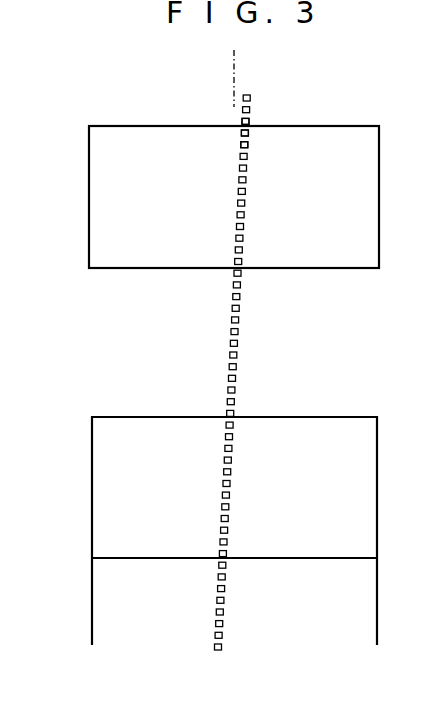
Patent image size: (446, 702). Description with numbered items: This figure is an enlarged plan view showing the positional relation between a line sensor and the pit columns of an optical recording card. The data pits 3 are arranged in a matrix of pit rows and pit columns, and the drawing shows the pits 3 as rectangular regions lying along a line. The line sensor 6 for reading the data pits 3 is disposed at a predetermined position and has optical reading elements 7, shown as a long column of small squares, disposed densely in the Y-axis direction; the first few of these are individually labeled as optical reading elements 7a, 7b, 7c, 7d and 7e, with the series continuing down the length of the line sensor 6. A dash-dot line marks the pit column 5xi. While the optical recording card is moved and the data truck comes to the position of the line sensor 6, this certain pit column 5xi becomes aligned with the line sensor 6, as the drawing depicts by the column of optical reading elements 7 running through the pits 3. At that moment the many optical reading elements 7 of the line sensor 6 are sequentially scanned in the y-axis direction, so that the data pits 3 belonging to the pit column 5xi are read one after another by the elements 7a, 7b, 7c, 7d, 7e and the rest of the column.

The pit 3 is at (89, 206).
The pit column 5xi is at (234, 60).
The line sensor 6 is at (230, 338).
The optical reading elements 7 is at (238, 332).
The optical reading element 7a is at (251, 98).
The optical reading element 7b is at (251, 109).
The optical reading element 7c is at (250, 122).
The optical reading element 7d is at (250, 135).
The optical reading element 7e is at (250, 147).